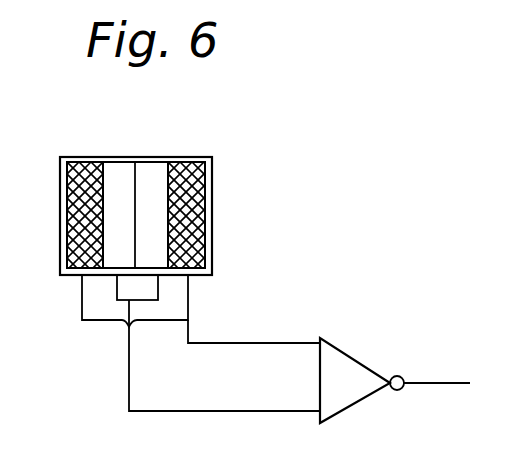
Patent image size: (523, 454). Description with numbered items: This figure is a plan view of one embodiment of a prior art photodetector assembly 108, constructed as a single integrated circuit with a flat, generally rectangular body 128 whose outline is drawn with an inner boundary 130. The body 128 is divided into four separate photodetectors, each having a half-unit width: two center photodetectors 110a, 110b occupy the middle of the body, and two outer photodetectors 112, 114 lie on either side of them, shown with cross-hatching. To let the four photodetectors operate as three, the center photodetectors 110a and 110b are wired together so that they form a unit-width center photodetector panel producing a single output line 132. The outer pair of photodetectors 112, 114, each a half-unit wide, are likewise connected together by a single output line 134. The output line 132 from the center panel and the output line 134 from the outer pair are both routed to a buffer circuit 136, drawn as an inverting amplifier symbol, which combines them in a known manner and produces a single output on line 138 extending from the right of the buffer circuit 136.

The sensor assembly 108 is at (222, 166).
The body 128 is at (97, 152).
The casing wall 130 is at (160, 154).
The photodetector 112 is at (77, 213).
The photodetector 114 is at (197, 213).
The center photodetector 110a is at (160, 175).
The center photodetector 110b is at (118, 170).
The output line 132 is at (128, 381).
The output line 134 is at (195, 340).
The buffer circuit 136 is at (337, 360).
The line 138 is at (443, 382).